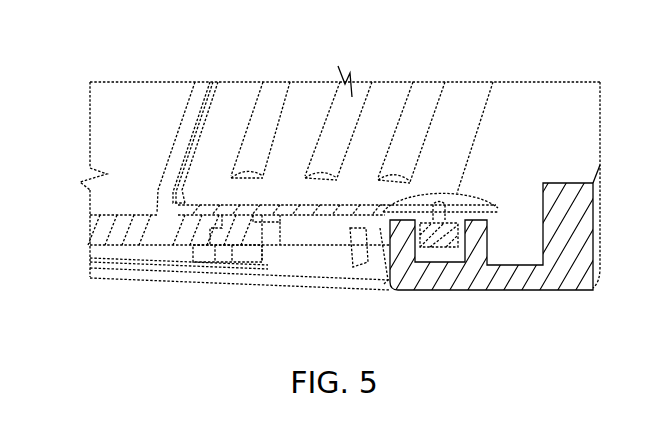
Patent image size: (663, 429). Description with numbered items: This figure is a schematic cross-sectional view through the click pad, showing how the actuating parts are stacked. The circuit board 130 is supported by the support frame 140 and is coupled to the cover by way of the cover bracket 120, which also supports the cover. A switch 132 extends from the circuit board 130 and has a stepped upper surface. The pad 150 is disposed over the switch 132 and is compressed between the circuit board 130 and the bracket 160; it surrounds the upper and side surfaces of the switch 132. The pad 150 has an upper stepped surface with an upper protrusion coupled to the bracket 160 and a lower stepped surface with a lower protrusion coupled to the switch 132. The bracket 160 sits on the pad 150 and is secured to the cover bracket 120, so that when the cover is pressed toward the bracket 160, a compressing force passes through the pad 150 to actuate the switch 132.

The cover bracket 120 is at (468, 277).
The circuit board 130 is at (137, 102).
The switch 132 is at (308, 260).
The support frame 140 is at (108, 232).
The pad 150 is at (211, 258).
The bracket 160 is at (237, 102).